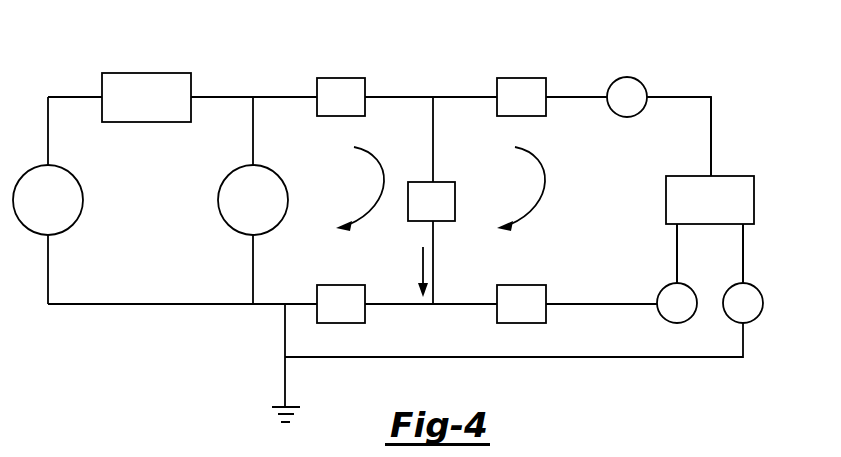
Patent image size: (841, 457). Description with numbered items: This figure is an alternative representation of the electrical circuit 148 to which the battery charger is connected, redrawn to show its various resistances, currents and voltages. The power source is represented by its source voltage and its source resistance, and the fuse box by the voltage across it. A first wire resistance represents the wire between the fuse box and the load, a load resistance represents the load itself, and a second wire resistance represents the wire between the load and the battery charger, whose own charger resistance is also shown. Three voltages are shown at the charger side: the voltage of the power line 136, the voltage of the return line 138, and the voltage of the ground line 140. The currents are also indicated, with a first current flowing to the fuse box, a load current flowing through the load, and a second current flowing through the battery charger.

The circuit 148 is at (421, 46).
The power line 136 is at (711, 138).
The return line 138 is at (677, 255).
The ground line 140 is at (743, 256).